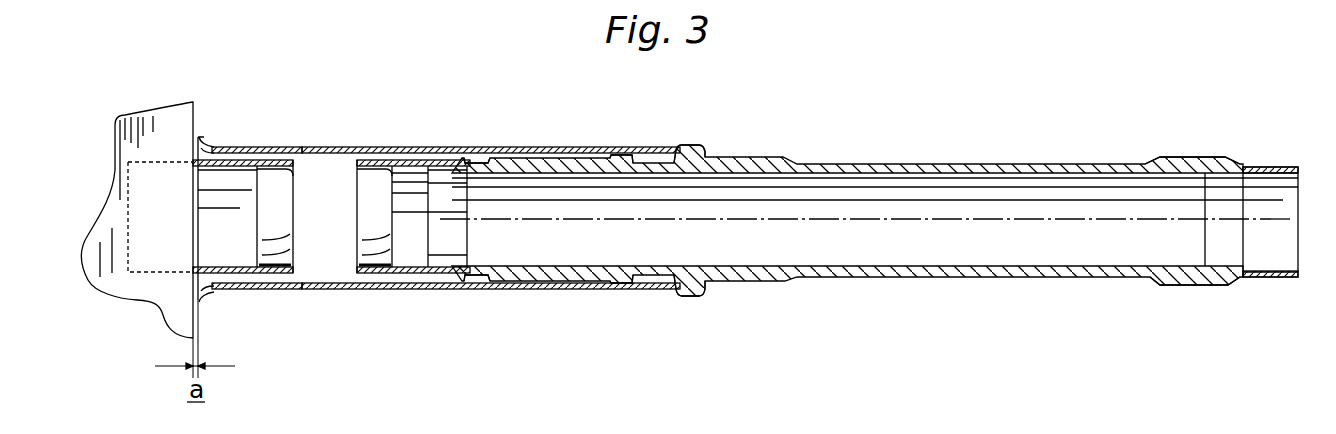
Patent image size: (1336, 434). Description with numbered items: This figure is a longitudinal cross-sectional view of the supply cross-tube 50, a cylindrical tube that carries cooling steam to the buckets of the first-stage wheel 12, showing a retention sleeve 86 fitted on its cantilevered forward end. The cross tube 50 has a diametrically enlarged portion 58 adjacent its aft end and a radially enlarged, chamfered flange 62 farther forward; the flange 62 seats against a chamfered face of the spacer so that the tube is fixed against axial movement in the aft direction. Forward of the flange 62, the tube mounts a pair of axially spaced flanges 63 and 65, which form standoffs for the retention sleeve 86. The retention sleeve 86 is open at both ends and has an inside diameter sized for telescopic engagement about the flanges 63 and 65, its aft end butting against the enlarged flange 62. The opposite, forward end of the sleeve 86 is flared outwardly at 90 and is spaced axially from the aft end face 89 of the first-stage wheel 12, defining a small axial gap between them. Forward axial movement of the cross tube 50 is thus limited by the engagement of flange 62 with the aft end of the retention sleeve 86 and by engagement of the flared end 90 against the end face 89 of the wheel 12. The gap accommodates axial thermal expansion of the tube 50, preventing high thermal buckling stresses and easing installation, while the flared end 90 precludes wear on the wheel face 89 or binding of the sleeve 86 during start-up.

The first-stage wheel 12 is at (157, 132).
The aft end face 89 is at (203, 113).
The flared end 90 is at (217, 143).
The retention sleeve 86 is at (329, 148).
The flange 65 is at (477, 157).
The flange 63 is at (620, 160).
The radially enlarged flange 62 is at (686, 152).
The supply cross-tube 50 is at (984, 167).
The diametrically enlarged portion 58 is at (1193, 155).